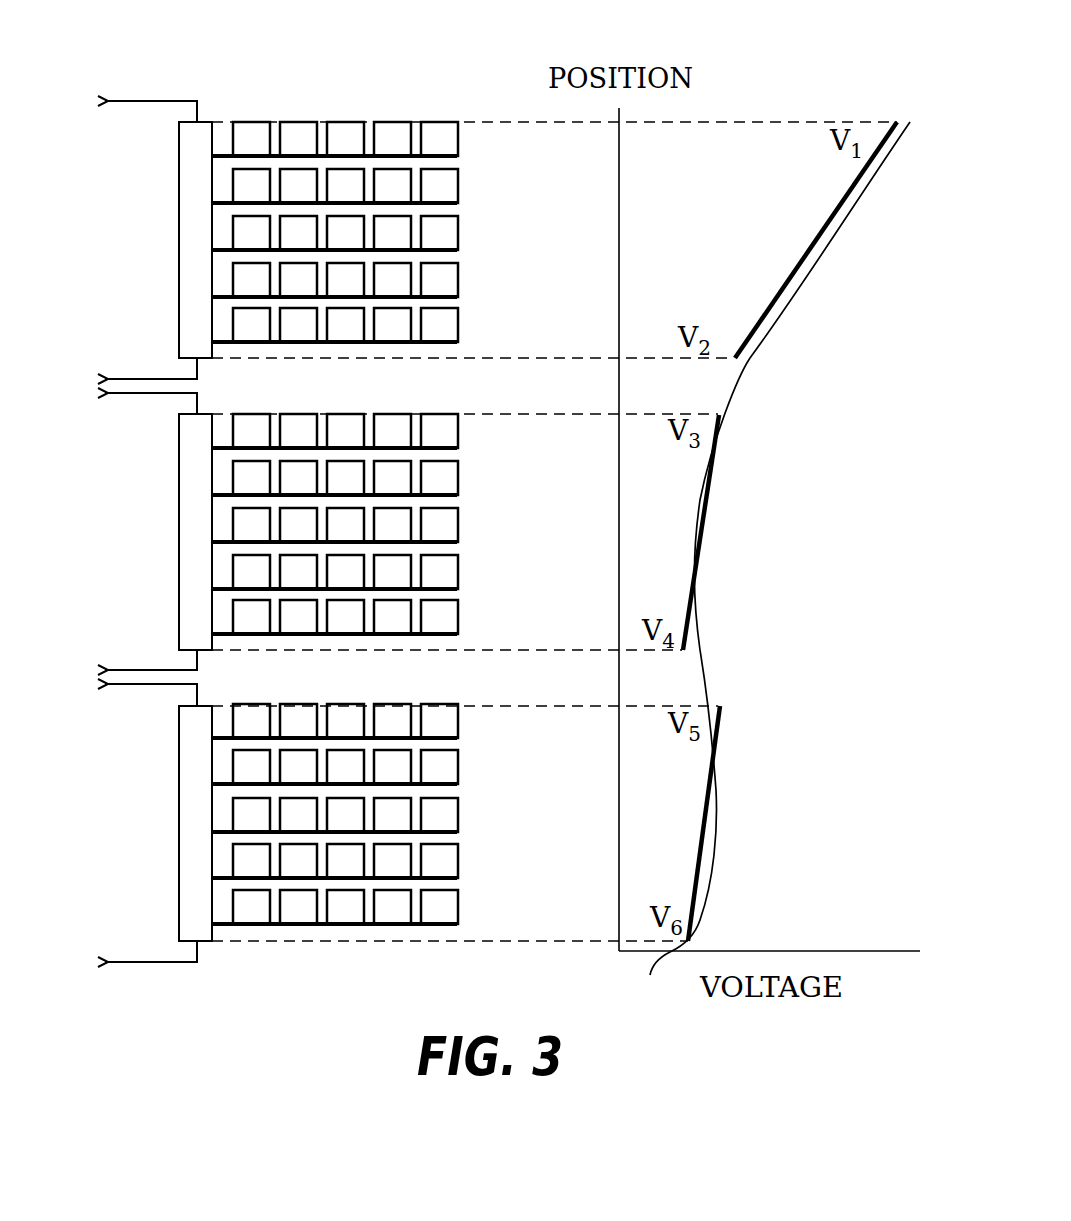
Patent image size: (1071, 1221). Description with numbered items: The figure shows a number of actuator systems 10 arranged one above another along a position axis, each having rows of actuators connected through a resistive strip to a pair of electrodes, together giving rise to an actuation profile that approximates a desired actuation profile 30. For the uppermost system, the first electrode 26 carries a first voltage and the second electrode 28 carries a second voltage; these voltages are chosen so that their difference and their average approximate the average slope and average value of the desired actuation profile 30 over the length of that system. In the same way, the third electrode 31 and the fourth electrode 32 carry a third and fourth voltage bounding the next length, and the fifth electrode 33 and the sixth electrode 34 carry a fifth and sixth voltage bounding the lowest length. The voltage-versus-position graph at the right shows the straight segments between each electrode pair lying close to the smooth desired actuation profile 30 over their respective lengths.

The actuator system 10 is at (368, 70).
The first electrode 26 is at (168, 104).
The second electrode 28 is at (158, 377).
The desired actuation profile 30 is at (737, 397).
The third electrode 31 is at (168, 396).
The fourth electrode 32 is at (158, 668).
The fifth electrode 33 is at (168, 688).
The sixth electrode 34 is at (158, 960).